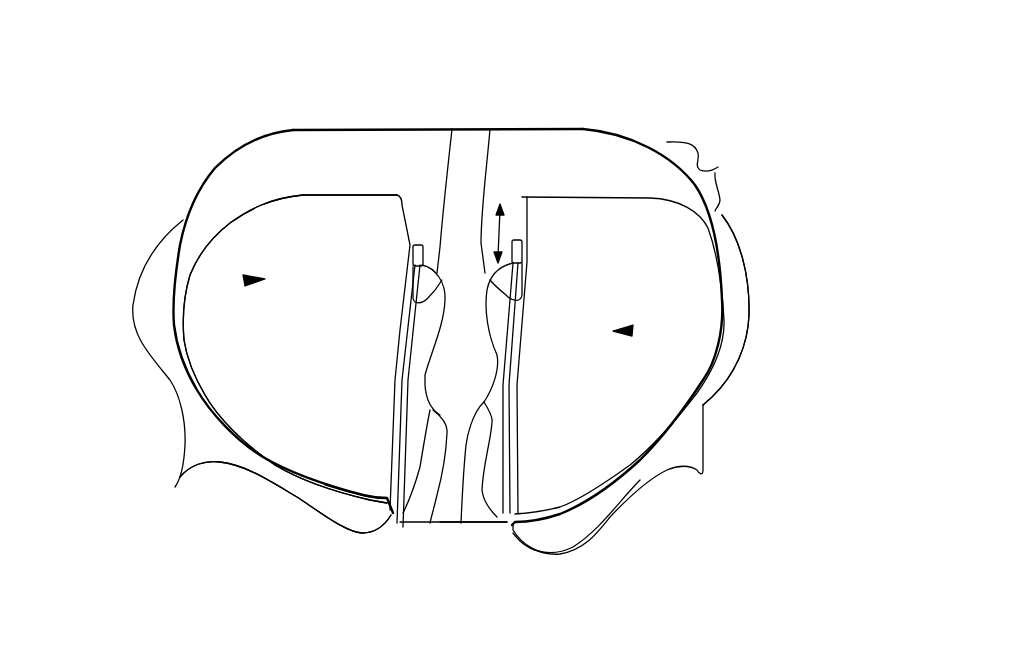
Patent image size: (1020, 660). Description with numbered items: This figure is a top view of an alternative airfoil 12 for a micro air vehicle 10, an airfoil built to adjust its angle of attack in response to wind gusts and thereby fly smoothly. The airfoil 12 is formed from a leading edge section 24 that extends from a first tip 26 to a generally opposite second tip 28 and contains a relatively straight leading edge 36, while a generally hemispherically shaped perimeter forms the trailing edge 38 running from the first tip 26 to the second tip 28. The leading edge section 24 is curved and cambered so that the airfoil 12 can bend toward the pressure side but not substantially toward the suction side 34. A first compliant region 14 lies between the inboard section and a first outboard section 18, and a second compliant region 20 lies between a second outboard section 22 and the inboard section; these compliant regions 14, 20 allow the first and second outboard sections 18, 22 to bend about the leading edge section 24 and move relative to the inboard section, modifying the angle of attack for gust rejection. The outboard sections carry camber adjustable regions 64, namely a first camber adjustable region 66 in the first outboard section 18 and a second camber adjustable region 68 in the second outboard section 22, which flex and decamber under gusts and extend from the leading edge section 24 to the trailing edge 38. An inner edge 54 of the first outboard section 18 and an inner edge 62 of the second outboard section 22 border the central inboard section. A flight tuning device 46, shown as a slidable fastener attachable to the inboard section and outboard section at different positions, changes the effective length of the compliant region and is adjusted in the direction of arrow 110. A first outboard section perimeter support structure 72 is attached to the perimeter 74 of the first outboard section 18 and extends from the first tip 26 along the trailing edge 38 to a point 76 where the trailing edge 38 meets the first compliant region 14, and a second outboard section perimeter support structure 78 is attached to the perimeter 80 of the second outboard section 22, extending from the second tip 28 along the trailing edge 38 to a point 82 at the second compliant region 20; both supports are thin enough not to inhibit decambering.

The micro air vehicle 10 is at (794, 104).
The airfoil 12 is at (676, 90).
The first compliant region 14 is at (428, 523).
The first outboard section 18 is at (159, 373).
The second compliant region 20 is at (462, 523).
The second outboard section 22 is at (623, 479).
The leading edge section 24 is at (710, 176).
The first tip 26 is at (185, 218).
The second tip 28 is at (717, 212).
The suction side 34 is at (332, 277).
The leading edge 36 is at (385, 128).
The trailing edge 38 is at (313, 487).
The flight tuning device 46 is at (410, 243).
The inner edge of the first outboard section 54 is at (453, 128).
The inner edge of the second outboard section 62 is at (490, 128).
The camber adjustable region 64 is at (245, 281).
The first camber adjustable region 66 is at (260, 330).
The second camber adjustable region 68 is at (653, 277).
The first outboard section perimeter support structure 72 is at (273, 460).
The perimeter of the first outboard section 74 is at (343, 487).
The point 76 is at (397, 520).
The second outboard section perimeter support structure 78 is at (703, 388).
The perimeter of the second outboard section 80 is at (603, 493).
The point 82 is at (503, 527).
The arrow 110 is at (527, 197).